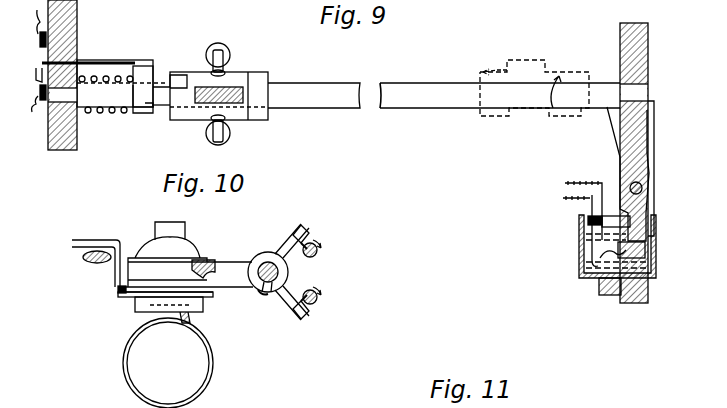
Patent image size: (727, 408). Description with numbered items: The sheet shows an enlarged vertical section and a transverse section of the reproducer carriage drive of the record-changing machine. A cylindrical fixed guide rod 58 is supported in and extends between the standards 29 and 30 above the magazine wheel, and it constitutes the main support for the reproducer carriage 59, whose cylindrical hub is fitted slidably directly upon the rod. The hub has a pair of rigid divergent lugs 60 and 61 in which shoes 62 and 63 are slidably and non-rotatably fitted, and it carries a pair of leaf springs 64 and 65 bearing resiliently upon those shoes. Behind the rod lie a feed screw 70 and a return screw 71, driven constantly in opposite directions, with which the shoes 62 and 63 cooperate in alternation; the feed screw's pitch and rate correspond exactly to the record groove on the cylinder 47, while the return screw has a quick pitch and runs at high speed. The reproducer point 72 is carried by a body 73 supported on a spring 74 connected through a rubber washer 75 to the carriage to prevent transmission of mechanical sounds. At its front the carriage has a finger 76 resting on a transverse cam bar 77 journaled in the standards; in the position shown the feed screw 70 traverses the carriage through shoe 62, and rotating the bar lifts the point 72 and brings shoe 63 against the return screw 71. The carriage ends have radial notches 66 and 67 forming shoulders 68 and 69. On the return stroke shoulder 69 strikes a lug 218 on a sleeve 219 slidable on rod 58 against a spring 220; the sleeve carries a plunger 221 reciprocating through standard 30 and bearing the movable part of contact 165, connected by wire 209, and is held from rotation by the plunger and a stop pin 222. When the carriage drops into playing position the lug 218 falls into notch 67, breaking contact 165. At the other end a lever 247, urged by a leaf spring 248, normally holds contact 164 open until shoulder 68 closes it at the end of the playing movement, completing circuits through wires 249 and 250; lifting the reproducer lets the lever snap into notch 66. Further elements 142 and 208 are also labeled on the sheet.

In FIG. 9, the standard 29 is at (632, 62).
In FIG. 9, the standard 30 is at (55, 138).
In FIG. 10, the cylinder 47 is at (125, 383).
In FIG. 9, the fixed guide rod 58 is at (455, 100).
In FIG. 10, the fixed guide rod 58 is at (276, 270).
In FIG. 9, the reproducer carriage 59 is at (262, 92).
In FIG. 10, the reproducer carriage 59 is at (264, 255).
In FIG. 9, the lug 60 is at (228, 140).
In FIG. 10, the lug 60 is at (305, 312).
In FIG. 9, the lug 61 is at (228, 48).
In FIG. 10, the lug 61 is at (299, 230).
In FIG. 9, the shoe 62 is at (222, 140).
In FIG. 10, the shoe 62 is at (301, 288).
In FIG. 9, the shoe 63 is at (230, 53).
In FIG. 10, the shoe 63 is at (316, 233).
In FIG. 9, the leaf spring 64 is at (212, 130).
In FIG. 10, the leaf spring 64 is at (283, 308).
In FIG. 9, the leaf spring 65 is at (218, 52).
In FIG. 10, the leaf spring 65 is at (282, 240).
In FIG. 10, the radial notch 66 is at (268, 292).
In FIG. 9, the radial notch 67 is at (180, 74).
In FIG. 10, the shoulder 68 is at (262, 290).
In FIG. 9, the shoulder 69 is at (170, 116).
In FIG. 10, the feed screw 70 is at (318, 300).
In FIG. 10, the return screw 71 is at (322, 258).
In FIG. 10, the reproducer point 72 is at (180, 327).
In FIG. 10, the body 73 is at (140, 308).
In FIG. 10, the spring 74 is at (124, 297).
In FIG. 10, the rubber washer 75 is at (118, 288).
In FIG. 10, the finger 76 is at (102, 243).
In FIG. 10, the cam bar 77 is at (84, 258).
In FIG. 11, the member 142 is at (352, 399).
In FIG. 9, the contact 164 is at (586, 266).
In FIG. 9, the contact 165 is at (40, 62).
In FIG. 9, the contact 208 is at (34, 23).
In FIG. 9, the wire 209 is at (27, 101).
In FIG. 9, the lug 218 is at (158, 86).
In FIG. 9, the sleeve 219 is at (130, 113).
In FIG. 9, the spring 220 is at (96, 78).
In FIG. 9, the plunger 221 is at (132, 63).
In FIG. 9, the stop pin 222 is at (150, 100).
In FIG. 9, the lever 247 is at (645, 160).
In FIG. 9, the leaf spring 248 is at (667, 168).
In FIG. 9, the wire 249 is at (575, 230).
In FIG. 9, the wire 250 is at (583, 202).